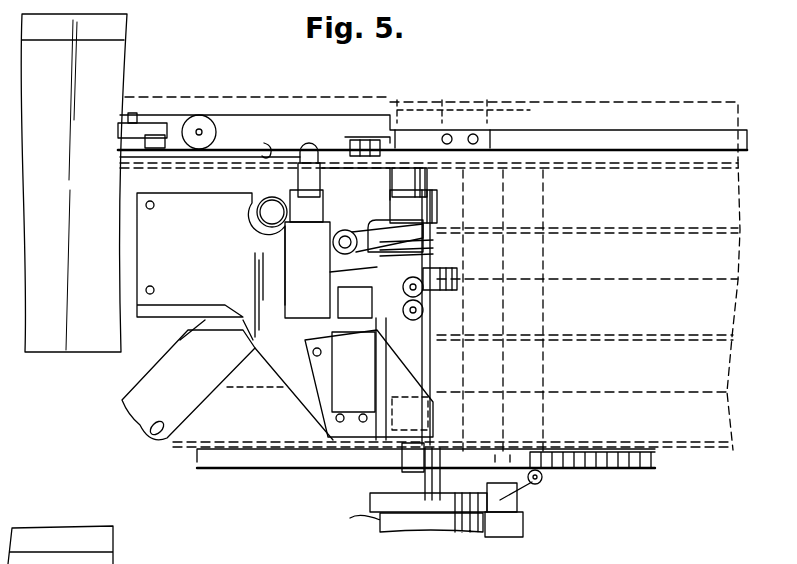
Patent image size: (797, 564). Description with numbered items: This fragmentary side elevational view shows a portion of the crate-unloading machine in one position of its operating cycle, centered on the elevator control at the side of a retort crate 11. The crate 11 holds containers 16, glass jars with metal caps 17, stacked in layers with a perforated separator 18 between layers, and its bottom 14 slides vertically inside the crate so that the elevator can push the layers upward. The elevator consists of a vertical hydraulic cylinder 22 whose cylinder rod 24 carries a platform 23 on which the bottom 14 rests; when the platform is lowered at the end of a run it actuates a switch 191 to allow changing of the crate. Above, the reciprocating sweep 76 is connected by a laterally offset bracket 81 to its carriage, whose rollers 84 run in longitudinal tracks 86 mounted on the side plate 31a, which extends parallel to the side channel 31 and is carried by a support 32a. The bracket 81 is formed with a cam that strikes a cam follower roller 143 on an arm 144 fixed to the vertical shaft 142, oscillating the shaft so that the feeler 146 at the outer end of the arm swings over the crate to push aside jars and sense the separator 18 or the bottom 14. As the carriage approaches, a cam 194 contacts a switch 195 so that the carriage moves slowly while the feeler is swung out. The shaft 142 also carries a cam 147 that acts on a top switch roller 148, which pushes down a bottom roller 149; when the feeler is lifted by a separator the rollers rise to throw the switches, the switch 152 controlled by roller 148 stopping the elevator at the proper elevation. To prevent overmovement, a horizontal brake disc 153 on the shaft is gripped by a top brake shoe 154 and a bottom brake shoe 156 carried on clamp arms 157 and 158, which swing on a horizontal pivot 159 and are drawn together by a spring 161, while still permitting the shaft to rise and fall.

The side plate 31a is at (116, 70).
The side member 31 is at (145, 177).
The bracket 81 is at (290, 117).
The sweep yoke 76 is at (732, 138).
The roller 84 is at (202, 128).
The longitudinal track 86 is at (203, 158).
The cam 194 is at (266, 150).
The cam follower roller 143 is at (356, 145).
The switch 195 is at (300, 178).
The feeler 146 is at (356, 184).
The arm 144 is at (392, 170).
The top brake shoe 154 is at (413, 206).
The vertical shaft 142 is at (430, 186).
The spring 161 is at (345, 230).
The clamp arm 157 is at (380, 225).
The horizontal pivot 159 is at (335, 243).
The brake disc 153 is at (436, 247).
The bottom brake shoe 156 is at (428, 258).
The clamp arm 158 is at (330, 272).
The cam 147 is at (458, 280).
The top switch roller 148 is at (424, 290).
The bottom switch roller 149 is at (424, 312).
The switch 152 is at (338, 302).
The support 32a is at (255, 222).
The retort crate 11 is at (720, 311).
The container 16 is at (500, 213).
The metal cap 17 is at (548, 330).
The separator 18 is at (618, 225).
The bottom 14 is at (698, 455).
The platform 23 is at (620, 455).
The cylinder rod 24 is at (405, 481).
The vertical hydraulic cylinder 22 is at (418, 522).
The switch 191 is at (525, 524).